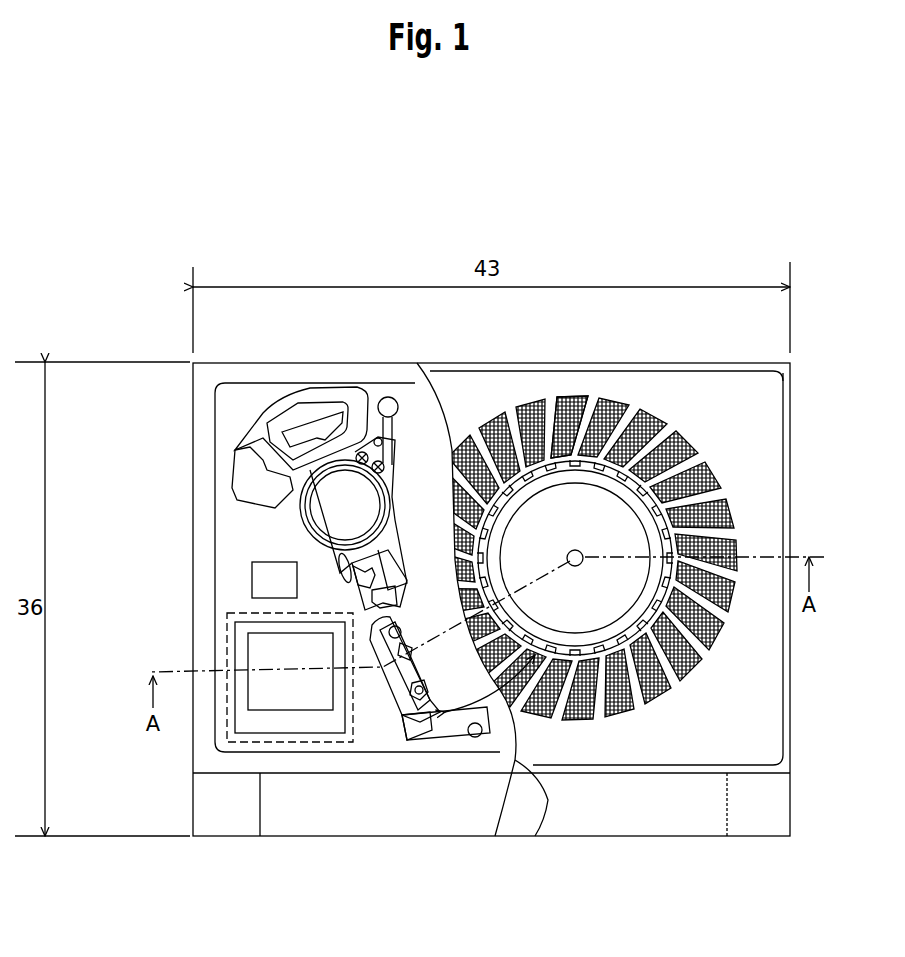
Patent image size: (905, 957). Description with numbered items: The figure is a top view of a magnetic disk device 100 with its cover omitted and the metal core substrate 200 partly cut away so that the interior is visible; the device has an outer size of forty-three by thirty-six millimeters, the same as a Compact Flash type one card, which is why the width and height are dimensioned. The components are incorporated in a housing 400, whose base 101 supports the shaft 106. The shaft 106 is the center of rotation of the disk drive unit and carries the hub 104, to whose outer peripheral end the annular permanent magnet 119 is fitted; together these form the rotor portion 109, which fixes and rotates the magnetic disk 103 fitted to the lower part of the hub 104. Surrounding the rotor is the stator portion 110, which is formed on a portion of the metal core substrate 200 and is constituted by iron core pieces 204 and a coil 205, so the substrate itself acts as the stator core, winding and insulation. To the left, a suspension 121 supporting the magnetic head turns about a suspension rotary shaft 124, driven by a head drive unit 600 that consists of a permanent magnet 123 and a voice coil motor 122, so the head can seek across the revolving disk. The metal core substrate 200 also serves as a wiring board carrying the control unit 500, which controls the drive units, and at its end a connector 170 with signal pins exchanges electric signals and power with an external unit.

The magnetic disk device 100 is at (712, 267).
The base 101 is at (790, 771).
The magnetic disk 103 is at (497, 790).
The hub 104 is at (608, 513).
The shaft 106 is at (583, 562).
The rotor portion 109 is at (532, 488).
The stator portion 110 is at (648, 403).
The annular permanent magnet 119 is at (653, 538).
The suspension 121 is at (373, 733).
The voice coil motor 122 is at (263, 437).
The permanent magnet 123 is at (242, 485).
The suspension rotary shaft 124 is at (328, 515).
The connector 170 is at (617, 830).
The metal core substrate 200 is at (750, 667).
The iron core piece 204 is at (590, 395).
The coil 205 is at (575, 395).
The housing 400 is at (794, 832).
The control unit 500 is at (263, 655).
The head drive unit 600 is at (118, 392).